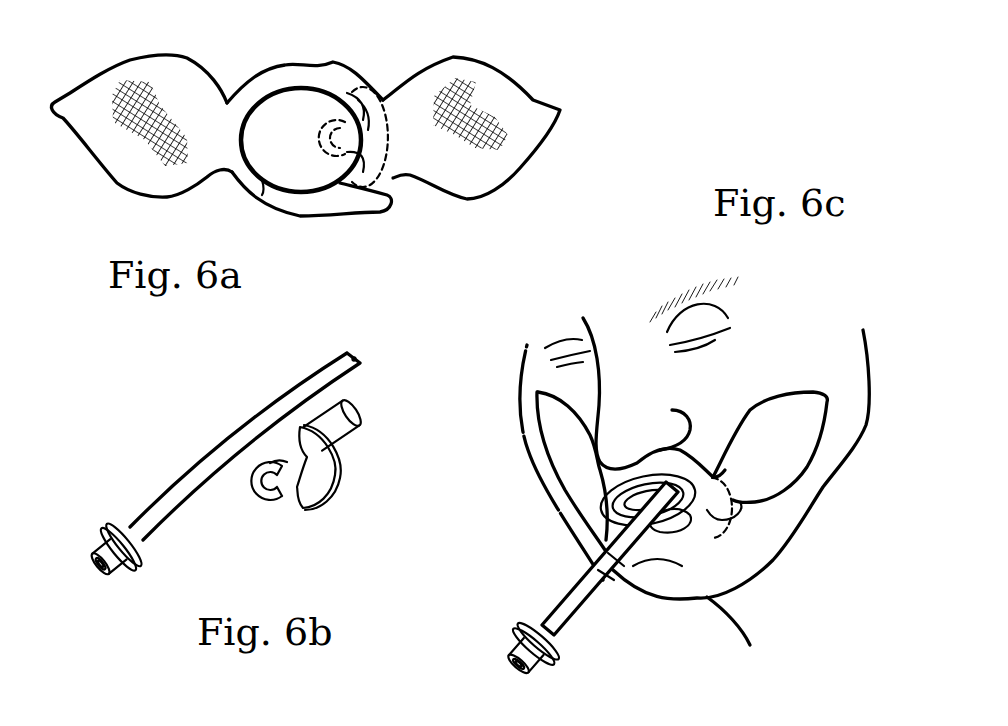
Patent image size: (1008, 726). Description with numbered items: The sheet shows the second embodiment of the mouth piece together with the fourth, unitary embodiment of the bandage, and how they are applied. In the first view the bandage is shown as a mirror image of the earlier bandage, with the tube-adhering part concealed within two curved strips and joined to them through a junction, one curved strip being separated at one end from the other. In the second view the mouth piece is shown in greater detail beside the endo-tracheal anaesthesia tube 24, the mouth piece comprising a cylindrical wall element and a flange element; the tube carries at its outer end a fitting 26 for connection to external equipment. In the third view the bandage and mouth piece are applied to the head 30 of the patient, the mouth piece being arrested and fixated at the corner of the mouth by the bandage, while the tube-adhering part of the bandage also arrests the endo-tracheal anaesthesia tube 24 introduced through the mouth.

In FIG. 6b, the endo-tracheal anaesthesia tube 24 is at (203, 463).
In FIG. 6c, the endo-tracheal anaesthesia tube 24 is at (580, 600).
In FIG. 6b, the fitting 26 is at (133, 567).
In FIG. 6c, the fitting 26 is at (505, 656).
In FIG. 6c, the head of the patient or person 30 is at (765, 318).